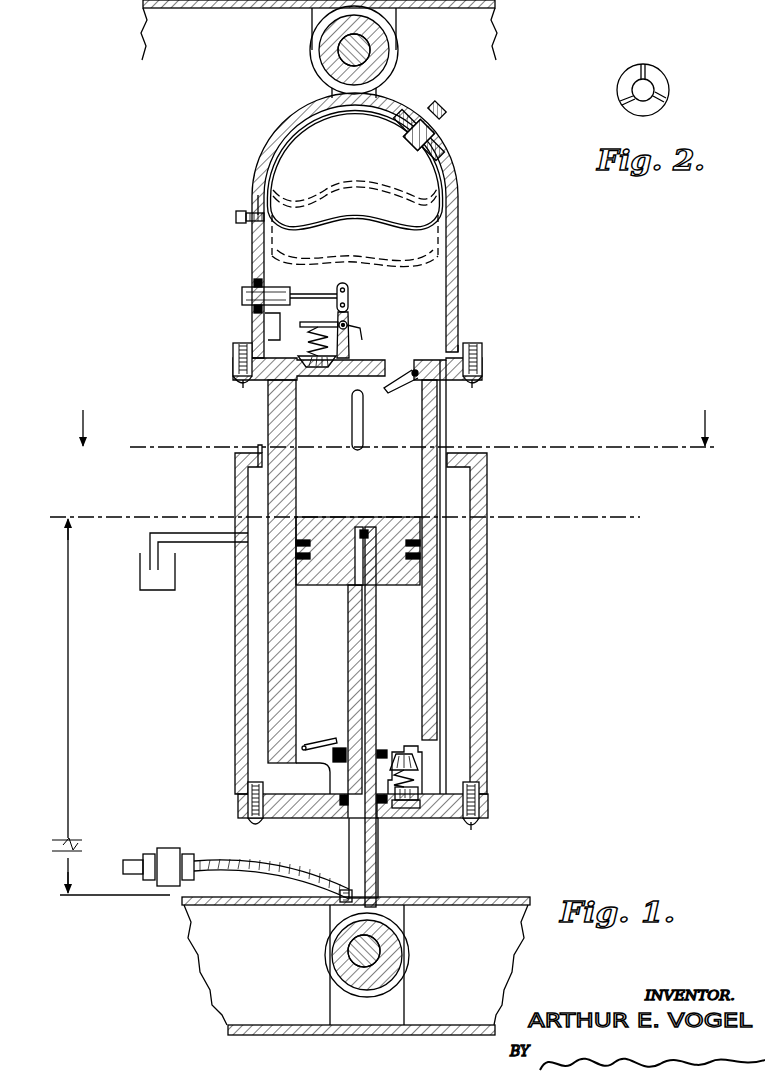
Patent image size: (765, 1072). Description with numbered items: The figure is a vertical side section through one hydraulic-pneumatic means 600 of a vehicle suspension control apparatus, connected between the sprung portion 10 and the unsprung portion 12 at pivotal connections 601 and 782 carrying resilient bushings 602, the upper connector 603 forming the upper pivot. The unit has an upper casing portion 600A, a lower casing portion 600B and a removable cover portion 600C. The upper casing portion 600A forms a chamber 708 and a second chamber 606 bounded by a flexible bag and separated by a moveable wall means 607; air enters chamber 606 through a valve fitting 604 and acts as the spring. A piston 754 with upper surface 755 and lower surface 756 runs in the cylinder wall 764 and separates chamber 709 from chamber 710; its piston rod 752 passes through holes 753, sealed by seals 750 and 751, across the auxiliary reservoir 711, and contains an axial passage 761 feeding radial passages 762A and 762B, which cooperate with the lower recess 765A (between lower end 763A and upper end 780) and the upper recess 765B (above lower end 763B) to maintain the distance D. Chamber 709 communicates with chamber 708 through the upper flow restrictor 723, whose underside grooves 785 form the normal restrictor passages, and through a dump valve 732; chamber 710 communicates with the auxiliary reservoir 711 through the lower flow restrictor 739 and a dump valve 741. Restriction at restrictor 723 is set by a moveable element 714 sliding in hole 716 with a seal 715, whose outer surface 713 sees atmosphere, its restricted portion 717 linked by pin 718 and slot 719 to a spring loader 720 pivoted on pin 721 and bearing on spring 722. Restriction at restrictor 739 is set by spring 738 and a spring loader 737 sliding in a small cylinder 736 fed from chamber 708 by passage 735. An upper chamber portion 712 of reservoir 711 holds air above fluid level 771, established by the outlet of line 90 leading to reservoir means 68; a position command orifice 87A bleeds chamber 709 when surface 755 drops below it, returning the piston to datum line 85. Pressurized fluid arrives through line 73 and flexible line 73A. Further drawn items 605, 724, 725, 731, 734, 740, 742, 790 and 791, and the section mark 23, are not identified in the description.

In FIG. 1, the sprung portion 10 is at (229, 34).
In FIG. 1, the pivotal connection 601 is at (362, 46).
In FIG. 1, the resilient bushings 602 is at (388, 55).
In FIG. 1, the upper connector 603 is at (395, 73).
In FIG. 1, the valve fitting 604 is at (450, 110).
In FIG. 1, the clamp strap 605 is at (448, 145).
In FIG. 1, the second chamber 606 is at (310, 147).
In FIG. 1, the bladder wall 790 is at (262, 172).
In FIG. 1, the bladder lip 791 is at (255, 200).
In FIG. 1, the moveable wall means 607 is at (245, 225).
In FIG. 1, the hydraulic-pneumatic means 600 is at (466, 185).
In FIG. 1, the upper casing portion 600A is at (462, 225).
In FIG. 1, the chamber 708 is at (440, 262).
In FIG. 1, the restricted portion 717 is at (305, 270).
In FIG. 1, the outer surface 713 is at (254, 283).
In FIG. 1, the moveable element 714 is at (242, 296).
In FIG. 1, the seal 715 is at (256, 311).
In FIG. 1, the hole 716 is at (272, 338).
In FIG. 1, the pin 718 is at (349, 292).
In FIG. 1, the slot 719 is at (349, 315).
In FIG. 1, the spring loader 720 is at (350, 326).
In FIG. 1, the pin 721 is at (352, 338).
In FIG. 1, the upper flow restrictor 723 is at (318, 368).
In FIG. 2, the upper flow restrictor 723 is at (669, 88).
In FIG. 1, the spring 722 is at (246, 384).
In FIG. 1, the bolt 724 is at (484, 360).
In FIG. 1, the passage 735 is at (460, 345).
In FIG. 1, the valve lever 731 is at (380, 392).
In FIG. 1, the dump valve 732 is at (470, 382).
In FIG. 1, the passage 734 is at (440, 398).
In FIG. 1, the upper recess 765B is at (440, 425).
In FIG. 1, the chamber 709 is at (447, 440).
In FIG. 1, the upper end 780 is at (447, 452).
In FIG. 1, the upper chamber portion 712 is at (268, 455).
In FIG. 1, the section line 23 is at (394, 417).
In FIG. 1, the lower recess 765A is at (472, 478).
In FIG. 1, the lower end 763A is at (470, 505).
In FIG. 1, the lower end 763B is at (357, 452).
In FIG. 1, the first radial passage 762A is at (364, 528).
In FIG. 1, the second radial passage 762B is at (420, 556).
In FIG. 1, the upper surface 755 is at (390, 525).
In FIG. 1, the piston 754 is at (336, 517).
In FIG. 1, the normal configuration datum line 85 is at (80, 517).
In FIG. 1, the position command orifice 87A is at (256, 475).
In FIG. 1, the fluid level 771 is at (240, 533).
In FIG. 1, the reservoir means 68 is at (140, 578).
In FIG. 1, the line 90 is at (200, 545).
In FIG. 1, the lower casing portion 600B is at (488, 575).
In FIG. 1, the lower surface 756 is at (332, 590).
In FIG. 1, the chamber 710 is at (415, 625).
In FIG. 1, the cylinder wall 764 is at (415, 655).
In FIG. 1, the auxiliary reservoir 711 is at (258, 660).
In FIG. 1, the valve block 740 is at (336, 746).
In FIG. 1, the dump valve 741 is at (300, 746).
In FIG. 1, the valve seat 742 is at (338, 765).
In FIG. 1, the lower flow restrictor 739 is at (402, 752).
In FIG. 1, the spring 738 is at (420, 768).
In FIG. 1, the bolt 725 is at (482, 798).
In FIG. 1, the removable cover portion 600C is at (488, 810).
In FIG. 1, the seal 750 is at (335, 812).
In FIG. 1, the seal 751 is at (320, 830).
In FIG. 1, the holes 753 is at (349, 850).
In FIG. 1, the piston rod 752 is at (378, 875).
In FIG. 1, the small cylinder 736 is at (408, 802).
In FIG. 1, the spring loader 737 is at (402, 810).
In FIG. 1, the axial passage 761 is at (378, 905).
In FIG. 1, the line 73 is at (135, 860).
In FIG. 1, the flexible line 73A is at (220, 858).
In FIG. 1, the unsprung portion 12 is at (262, 956).
In FIG. 1, the pivotal connection 782 is at (382, 965).
In FIG. 1, the predetermined distance D is at (111, 707).
In FIG. 2, the grooves 785 is at (620, 80).